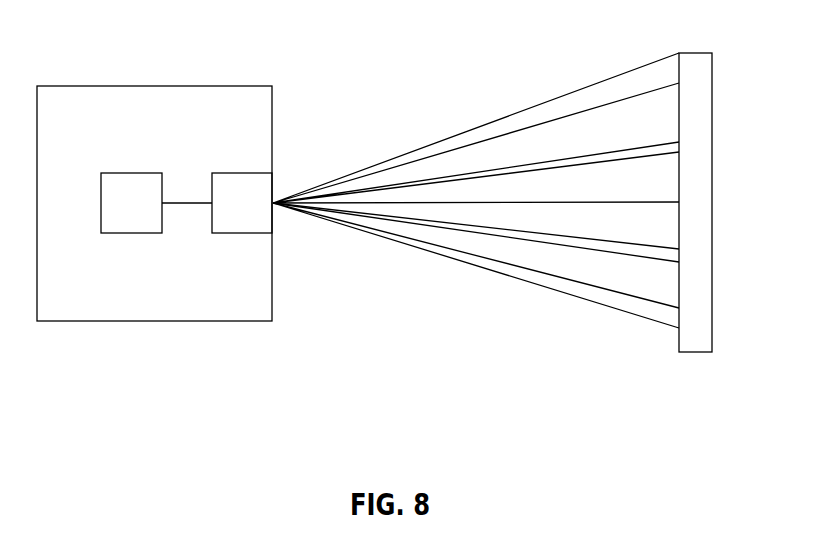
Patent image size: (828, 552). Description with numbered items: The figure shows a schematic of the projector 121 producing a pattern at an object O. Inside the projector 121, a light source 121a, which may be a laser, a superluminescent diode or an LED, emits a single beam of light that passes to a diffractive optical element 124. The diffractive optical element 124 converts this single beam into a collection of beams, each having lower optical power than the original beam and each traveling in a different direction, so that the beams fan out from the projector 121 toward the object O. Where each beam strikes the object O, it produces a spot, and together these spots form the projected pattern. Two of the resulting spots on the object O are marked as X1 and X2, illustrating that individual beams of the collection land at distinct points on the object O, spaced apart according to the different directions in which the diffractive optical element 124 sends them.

The projector 121 is at (87, 322).
The light source 121a is at (148, 233).
The diffractive optical element 124 is at (245, 172).
The first point X1 is at (679, 249).
The second point X2 is at (679, 262).
The object O is at (695, 353).